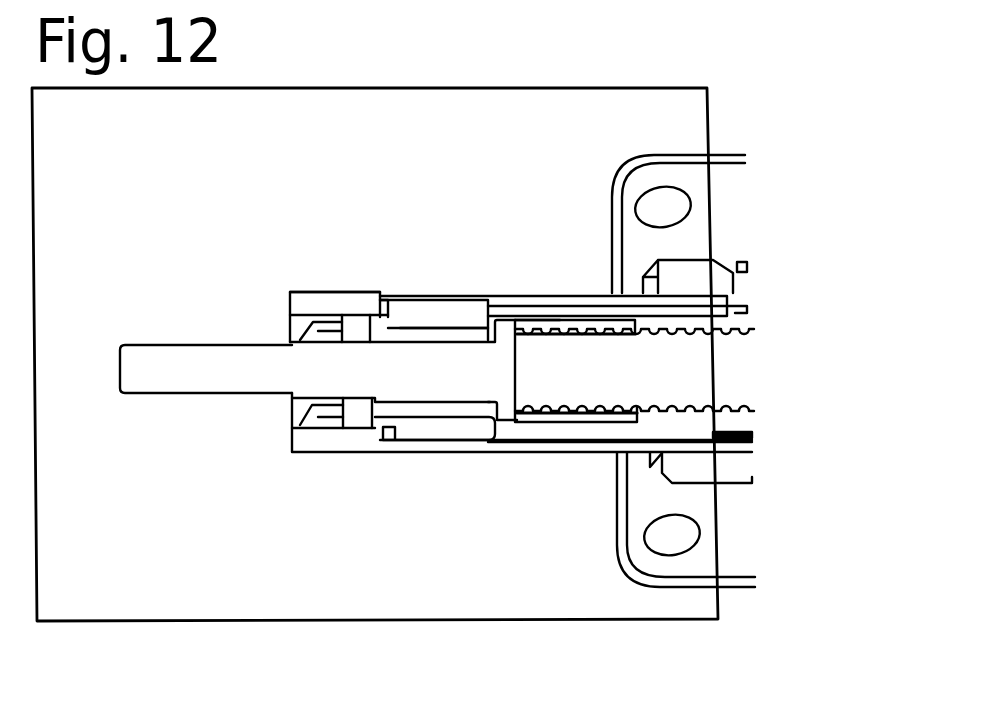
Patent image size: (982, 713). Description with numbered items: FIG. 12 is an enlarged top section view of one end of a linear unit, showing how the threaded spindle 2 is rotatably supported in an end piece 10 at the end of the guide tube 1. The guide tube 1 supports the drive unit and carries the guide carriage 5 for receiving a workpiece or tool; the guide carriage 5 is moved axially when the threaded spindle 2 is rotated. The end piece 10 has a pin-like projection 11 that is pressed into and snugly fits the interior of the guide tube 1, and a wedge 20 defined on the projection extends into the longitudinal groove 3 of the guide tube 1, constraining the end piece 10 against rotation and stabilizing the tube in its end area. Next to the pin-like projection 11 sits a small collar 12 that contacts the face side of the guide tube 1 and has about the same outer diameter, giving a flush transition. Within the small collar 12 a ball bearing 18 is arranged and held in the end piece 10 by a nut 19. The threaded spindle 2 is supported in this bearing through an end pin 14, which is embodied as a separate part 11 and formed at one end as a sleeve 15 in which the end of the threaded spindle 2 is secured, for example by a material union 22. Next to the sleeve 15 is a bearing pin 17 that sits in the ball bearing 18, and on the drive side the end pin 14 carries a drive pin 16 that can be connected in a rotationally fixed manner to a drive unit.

The guide tube 1 is at (634, 506).
The threaded spindle 2 is at (570, 368).
The longitudinal groove 3 is at (508, 303).
The guide carriage 5 is at (727, 187).
The end piece 10 is at (312, 269).
The pin-like projection 11 is at (443, 428).
The small collar 12 is at (300, 303).
The end pin 14 is at (431, 325).
The sleeve 15 is at (578, 410).
The drive pin 16 is at (153, 375).
The bearing pin 17 is at (388, 368).
The ball bearing 18 is at (353, 417).
The nut 19 is at (320, 407).
The wedge 20 is at (405, 310).
The material union 22 is at (544, 332).